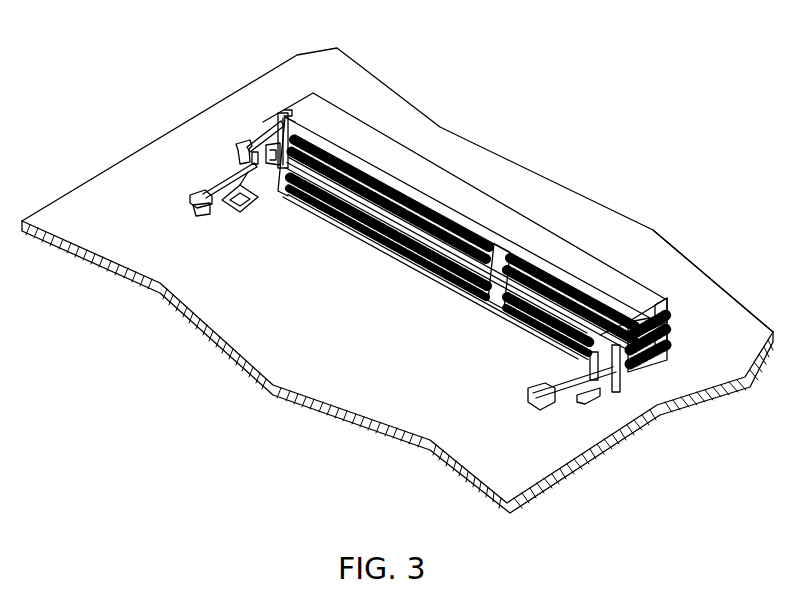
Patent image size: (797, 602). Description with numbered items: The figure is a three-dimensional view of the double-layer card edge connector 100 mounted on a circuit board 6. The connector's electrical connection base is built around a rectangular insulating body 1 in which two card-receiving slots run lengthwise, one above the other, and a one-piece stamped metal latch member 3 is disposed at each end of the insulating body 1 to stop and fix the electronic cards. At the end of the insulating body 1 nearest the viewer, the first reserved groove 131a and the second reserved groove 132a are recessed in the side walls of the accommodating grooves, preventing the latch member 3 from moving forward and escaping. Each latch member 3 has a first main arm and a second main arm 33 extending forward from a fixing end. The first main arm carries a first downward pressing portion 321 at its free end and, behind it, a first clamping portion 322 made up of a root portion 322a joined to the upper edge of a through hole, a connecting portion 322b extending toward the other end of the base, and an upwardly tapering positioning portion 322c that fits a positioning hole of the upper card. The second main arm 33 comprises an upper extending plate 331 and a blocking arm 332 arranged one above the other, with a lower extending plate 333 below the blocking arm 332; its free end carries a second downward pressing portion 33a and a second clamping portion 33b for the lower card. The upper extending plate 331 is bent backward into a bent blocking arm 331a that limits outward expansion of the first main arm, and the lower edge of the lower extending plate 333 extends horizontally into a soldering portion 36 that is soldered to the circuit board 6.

The insulating body 1 is at (410, 170).
The double-layer card edge connector 100 is at (503, 205).
The circuit board 6 is at (677, 248).
The latch member 3 is at (537, 415).
The soldering portion 36 is at (575, 400).
The second main arm 33 is at (302, 247).
The second downward pressing portion 33a is at (203, 193).
The second clamping portion 33b is at (198, 208).
The upper extending plate 331 is at (250, 165).
The bent blocking arm 331a is at (613, 345).
The blocking arm 332 is at (243, 202).
The lower extending plate 333 is at (233, 207).
The first downward pressing portion 321 is at (247, 135).
The first clamping portion 322 is at (258, 39).
The root portion 322a is at (262, 127).
The connecting portion 322b is at (273, 118).
The positioning portion 322c is at (285, 113).
The first reserved groove 131a is at (668, 330).
The second reserved groove 132a is at (665, 347).